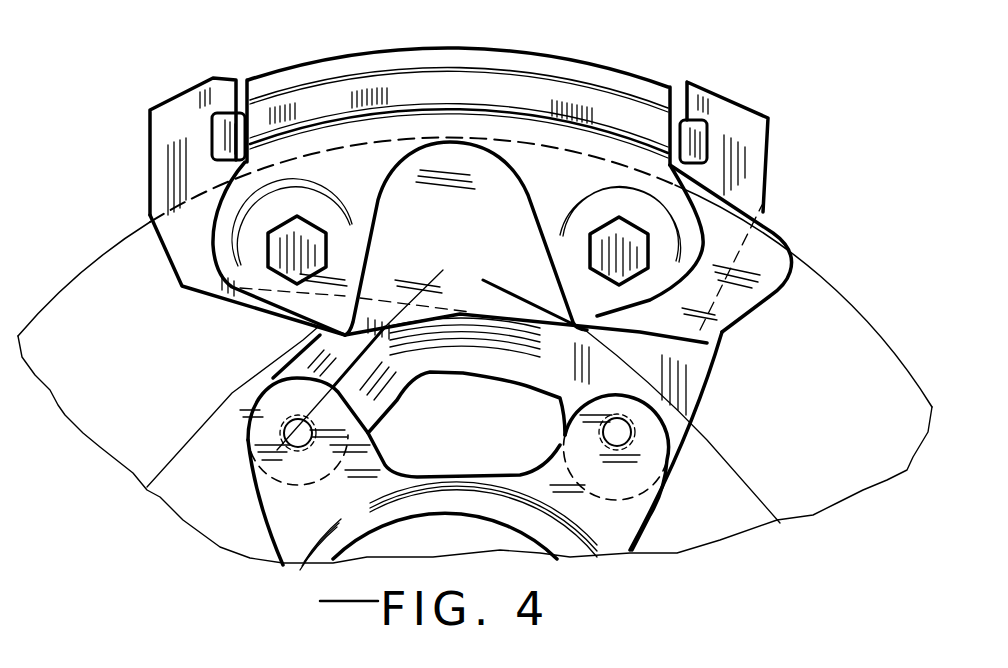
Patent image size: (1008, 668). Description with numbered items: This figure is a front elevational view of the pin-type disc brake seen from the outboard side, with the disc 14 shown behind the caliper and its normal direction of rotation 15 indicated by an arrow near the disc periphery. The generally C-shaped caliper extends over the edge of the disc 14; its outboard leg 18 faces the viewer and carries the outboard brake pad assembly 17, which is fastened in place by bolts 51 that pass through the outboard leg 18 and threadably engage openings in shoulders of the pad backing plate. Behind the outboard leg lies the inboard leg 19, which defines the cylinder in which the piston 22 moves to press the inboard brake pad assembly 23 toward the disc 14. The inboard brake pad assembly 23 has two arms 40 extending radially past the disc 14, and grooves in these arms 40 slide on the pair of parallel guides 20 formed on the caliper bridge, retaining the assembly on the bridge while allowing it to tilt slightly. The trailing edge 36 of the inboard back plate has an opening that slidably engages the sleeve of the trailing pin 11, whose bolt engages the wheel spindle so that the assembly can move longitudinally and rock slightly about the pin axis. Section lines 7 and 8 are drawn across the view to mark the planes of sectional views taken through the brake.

The section line 7- 7 is at (462, 27).
The section line 8- 8 is at (492, 17).
The pin 11 is at (300, 167).
The disc 14 is at (823, 270).
The normal direction of rotation 15 is at (868, 476).
The outboard brake pad assembly 17 is at (772, 302).
The outboard leg 18 is at (360, 272).
The inboard leg 19 is at (390, 400).
The guides 20 is at (213, 138).
The piston 22 is at (483, 333).
The inboard brake pad assembly 23 is at (780, 148).
The trailing edge 36 is at (702, 432).
The arms 40 is at (185, 97).
The bolts 51 is at (310, 222).